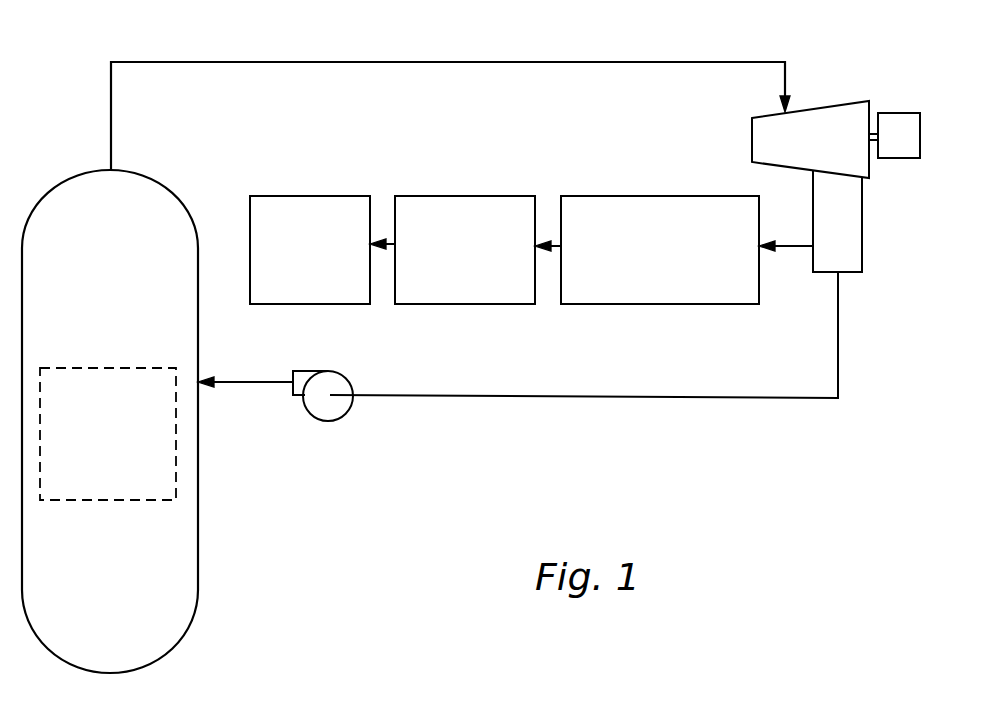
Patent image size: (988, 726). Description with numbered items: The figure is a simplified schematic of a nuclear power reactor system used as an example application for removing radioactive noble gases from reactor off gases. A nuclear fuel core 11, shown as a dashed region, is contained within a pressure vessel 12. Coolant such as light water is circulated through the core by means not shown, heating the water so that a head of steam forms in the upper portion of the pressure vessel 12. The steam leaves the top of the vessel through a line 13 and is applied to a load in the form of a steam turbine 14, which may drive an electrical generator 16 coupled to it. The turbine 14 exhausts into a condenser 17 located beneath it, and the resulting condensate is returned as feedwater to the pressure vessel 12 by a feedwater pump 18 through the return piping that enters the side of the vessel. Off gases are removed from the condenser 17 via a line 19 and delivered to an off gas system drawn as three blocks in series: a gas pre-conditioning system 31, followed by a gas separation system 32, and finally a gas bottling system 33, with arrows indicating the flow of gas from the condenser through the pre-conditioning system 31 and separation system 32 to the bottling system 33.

The nuclear fuel core 11 is at (176, 446).
The pressure vessel 12 is at (198, 545).
The line 13 is at (440, 63).
The steam turbine 14 is at (830, 104).
The electrical generator 16 is at (903, 113).
The condenser 17 is at (862, 234).
The feedwater pump 18 is at (350, 412).
The line 19 is at (793, 246).
The gas pre-conditioning system 31 is at (651, 196).
The gas separation system 32 is at (477, 196).
The gas bottling system 33 is at (303, 196).